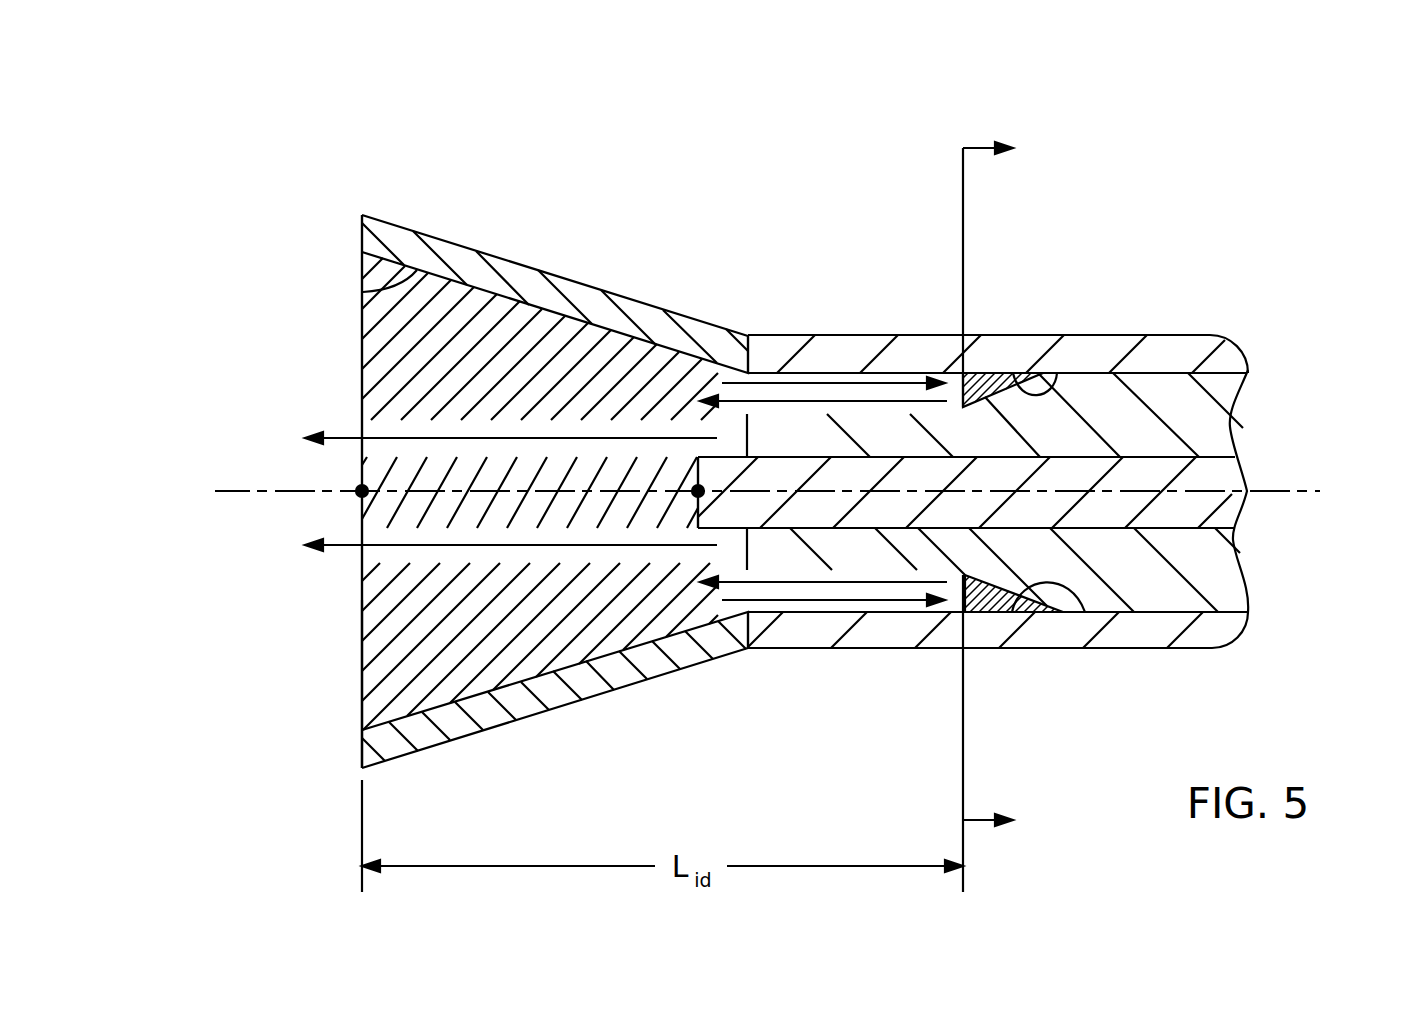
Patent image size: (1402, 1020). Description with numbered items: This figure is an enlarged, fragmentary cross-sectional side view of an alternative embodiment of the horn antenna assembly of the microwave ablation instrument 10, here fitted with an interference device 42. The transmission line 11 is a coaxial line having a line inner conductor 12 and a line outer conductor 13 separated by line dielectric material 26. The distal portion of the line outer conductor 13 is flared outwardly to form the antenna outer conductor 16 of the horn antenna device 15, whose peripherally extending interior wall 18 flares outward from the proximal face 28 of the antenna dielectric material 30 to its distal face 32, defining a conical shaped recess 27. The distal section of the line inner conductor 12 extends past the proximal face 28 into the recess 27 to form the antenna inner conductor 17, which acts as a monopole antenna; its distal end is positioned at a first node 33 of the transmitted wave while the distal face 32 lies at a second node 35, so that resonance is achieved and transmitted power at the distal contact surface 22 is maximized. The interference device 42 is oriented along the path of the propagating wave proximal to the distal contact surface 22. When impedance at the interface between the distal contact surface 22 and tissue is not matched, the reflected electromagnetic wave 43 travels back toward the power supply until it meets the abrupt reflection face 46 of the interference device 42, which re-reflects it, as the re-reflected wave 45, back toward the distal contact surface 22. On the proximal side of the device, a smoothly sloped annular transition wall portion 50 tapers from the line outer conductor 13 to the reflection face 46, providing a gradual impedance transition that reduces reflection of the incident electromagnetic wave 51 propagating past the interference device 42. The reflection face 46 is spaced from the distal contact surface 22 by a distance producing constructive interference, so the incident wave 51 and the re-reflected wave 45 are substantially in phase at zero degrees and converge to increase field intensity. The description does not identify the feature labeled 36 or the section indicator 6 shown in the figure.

The microwave ablation instrument 10 is at (721, 145).
The transmission line 11 is at (1157, 335).
The line inner conductor 12 is at (1182, 650).
The line outer conductor 13 is at (1247, 467).
The horn antenna device 15 is at (521, 255).
The antenna outer conductor 16 is at (583, 683).
The antenna inner conductor 17 is at (698, 491).
The interior wall 18 is at (363, 292).
The distal contact surface 22 is at (287, 684).
The line dielectric material 26 is at (1232, 425).
The conical shaped recess 27 is at (412, 671).
The proximal face 28 is at (765, 372).
The antenna dielectric material 30 is at (375, 342).
The distal face 32 is at (362, 655).
The first node 33 is at (698, 491).
The second node 35 is at (362, 491).
The junction 36 is at (720, 620).
The interference device 42 is at (988, 372).
The reflected electromagnetic wave 43 is at (868, 420).
The re-reflected wave 45 is at (810, 398).
The reflection face 46 is at (946, 372).
The transition wall portion 50 is at (1057, 373).
The incident electromagnetic wave 51 is at (330, 436).
The section line 6- 6 is at (1001, 512).